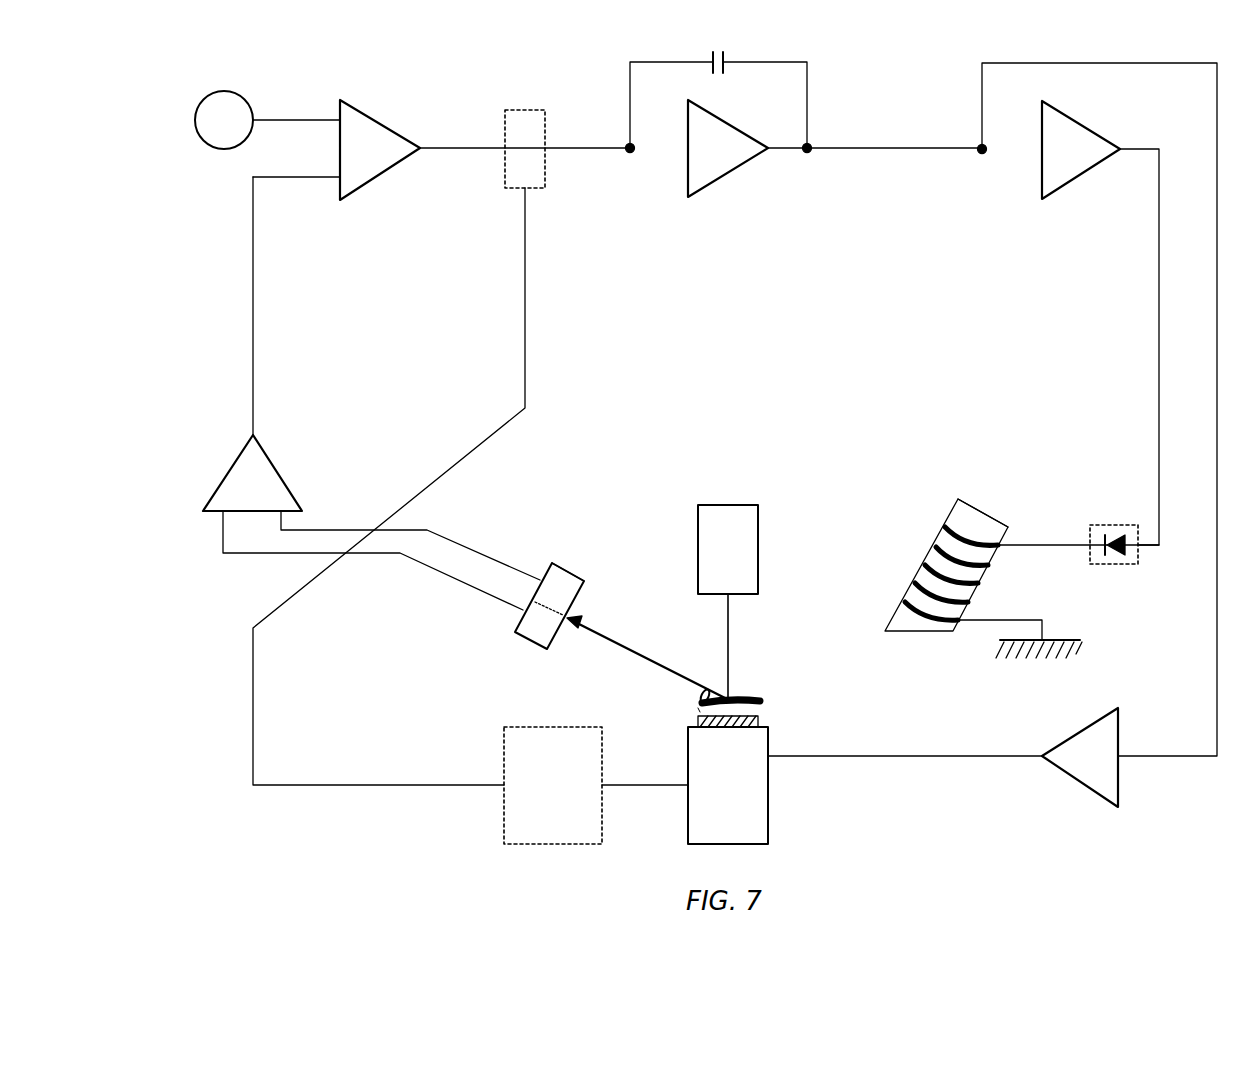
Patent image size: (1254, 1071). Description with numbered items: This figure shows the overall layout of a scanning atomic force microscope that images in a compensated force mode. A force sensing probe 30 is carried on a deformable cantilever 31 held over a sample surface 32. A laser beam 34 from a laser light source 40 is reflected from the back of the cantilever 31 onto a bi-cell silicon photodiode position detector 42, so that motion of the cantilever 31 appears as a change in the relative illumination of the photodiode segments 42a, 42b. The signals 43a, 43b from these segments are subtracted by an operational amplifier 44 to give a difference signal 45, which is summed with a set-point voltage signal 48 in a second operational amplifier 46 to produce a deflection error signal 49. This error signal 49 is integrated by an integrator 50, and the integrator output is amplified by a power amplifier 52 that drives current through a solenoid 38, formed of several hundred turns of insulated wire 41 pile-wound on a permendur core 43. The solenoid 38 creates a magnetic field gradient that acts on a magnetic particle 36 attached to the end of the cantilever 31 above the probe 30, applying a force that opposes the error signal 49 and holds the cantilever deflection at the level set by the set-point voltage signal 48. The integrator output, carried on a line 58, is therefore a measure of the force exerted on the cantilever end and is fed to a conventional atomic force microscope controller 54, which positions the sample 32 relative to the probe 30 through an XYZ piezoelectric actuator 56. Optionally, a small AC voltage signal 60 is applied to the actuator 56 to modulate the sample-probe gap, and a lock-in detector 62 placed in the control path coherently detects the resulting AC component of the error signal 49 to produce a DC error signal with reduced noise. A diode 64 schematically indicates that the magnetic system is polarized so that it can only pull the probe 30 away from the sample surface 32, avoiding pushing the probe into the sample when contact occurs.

The force sensing probe 30 is at (686, 710).
The deformable cantilever 31 is at (765, 700).
The sample surface 32 is at (698, 716).
The laser beam 34 is at (725, 641).
The magnetic particle 36 is at (701, 692).
The solenoid 38 is at (990, 572).
The laser light source 40 is at (758, 545).
The insulated wire 41 is at (975, 537).
The bi-cell silicon photodiode position detector 42 is at (582, 591).
The photodiode segment 42a is at (517, 615).
The photodiode segment 42b is at (545, 576).
The core 43 is at (958, 500).
The photodiode segment signal 43a is at (222, 519).
The photodiode segment signal 43b is at (282, 528).
The operational amplifier 44 is at (268, 455).
The difference signal 45 is at (253, 325).
The operational amplifier 46 is at (380, 118).
The set-point voltage signal 48 is at (224, 91).
The deflection error signal 49 is at (448, 146).
The integrator 50 is at (728, 177).
The power amplifier 52 is at (1083, 175).
The atomic force microscope controller 54 is at (1122, 730).
The XYZ piezoelectric actuator 56 is at (768, 805).
The integrator output line 58 is at (982, 102).
The AC voltage signal 60 is at (504, 758).
The lock-in detector 62 is at (522, 110).
The diode 64 is at (1108, 535).